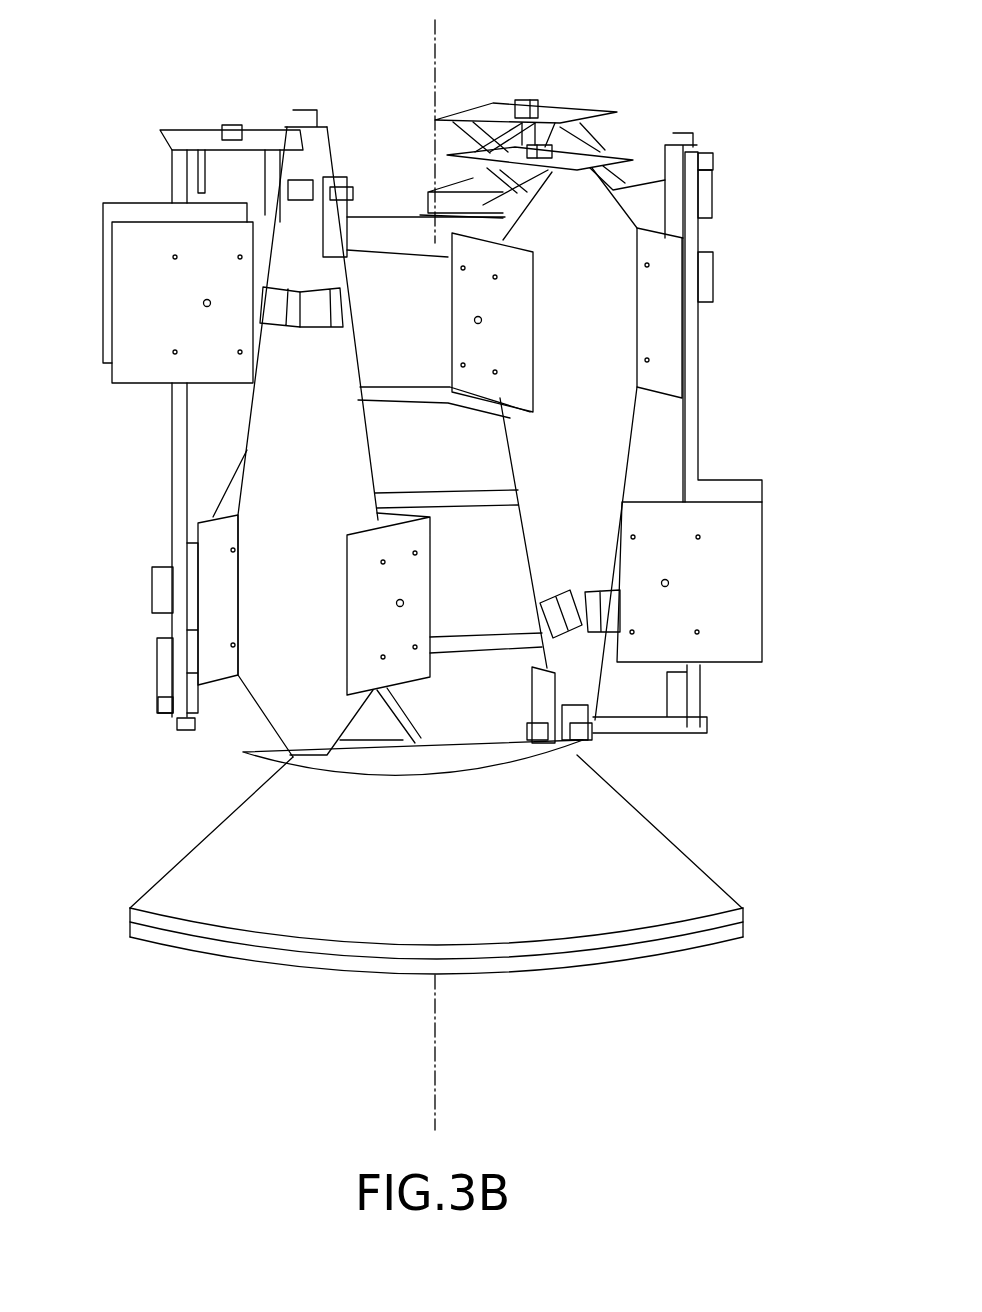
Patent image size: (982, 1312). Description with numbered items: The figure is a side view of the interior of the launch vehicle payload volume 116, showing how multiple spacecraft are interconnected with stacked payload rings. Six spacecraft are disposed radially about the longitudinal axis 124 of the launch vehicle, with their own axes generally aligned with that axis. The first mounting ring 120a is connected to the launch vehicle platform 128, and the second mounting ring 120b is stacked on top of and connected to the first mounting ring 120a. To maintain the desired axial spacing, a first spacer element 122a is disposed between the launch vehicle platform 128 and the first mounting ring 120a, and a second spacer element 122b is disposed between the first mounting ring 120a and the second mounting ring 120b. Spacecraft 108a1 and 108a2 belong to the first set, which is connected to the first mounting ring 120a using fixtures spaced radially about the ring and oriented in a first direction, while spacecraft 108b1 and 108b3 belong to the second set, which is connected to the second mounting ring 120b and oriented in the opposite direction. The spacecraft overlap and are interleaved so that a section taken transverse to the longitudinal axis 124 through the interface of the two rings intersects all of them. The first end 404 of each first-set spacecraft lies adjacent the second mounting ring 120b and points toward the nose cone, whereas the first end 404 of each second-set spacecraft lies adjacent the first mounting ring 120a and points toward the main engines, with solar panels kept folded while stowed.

The payload volume 116 is at (653, 103).
The longitudinal axis 124 is at (435, 68).
The first end 404 is at (310, 230).
The first mounting ring 120a is at (507, 572).
The second mounting ring 120b is at (407, 277).
The first spacer element 122a is at (502, 718).
The second spacer element 122b is at (392, 442).
The spacecraft 108a1 is at (280, 680).
The spacecraft 108a2 is at (693, 352).
The spacecraft 108b1 is at (610, 435).
The spacecraft 108b3 is at (210, 440).
The launch vehicle platform 128 is at (707, 878).